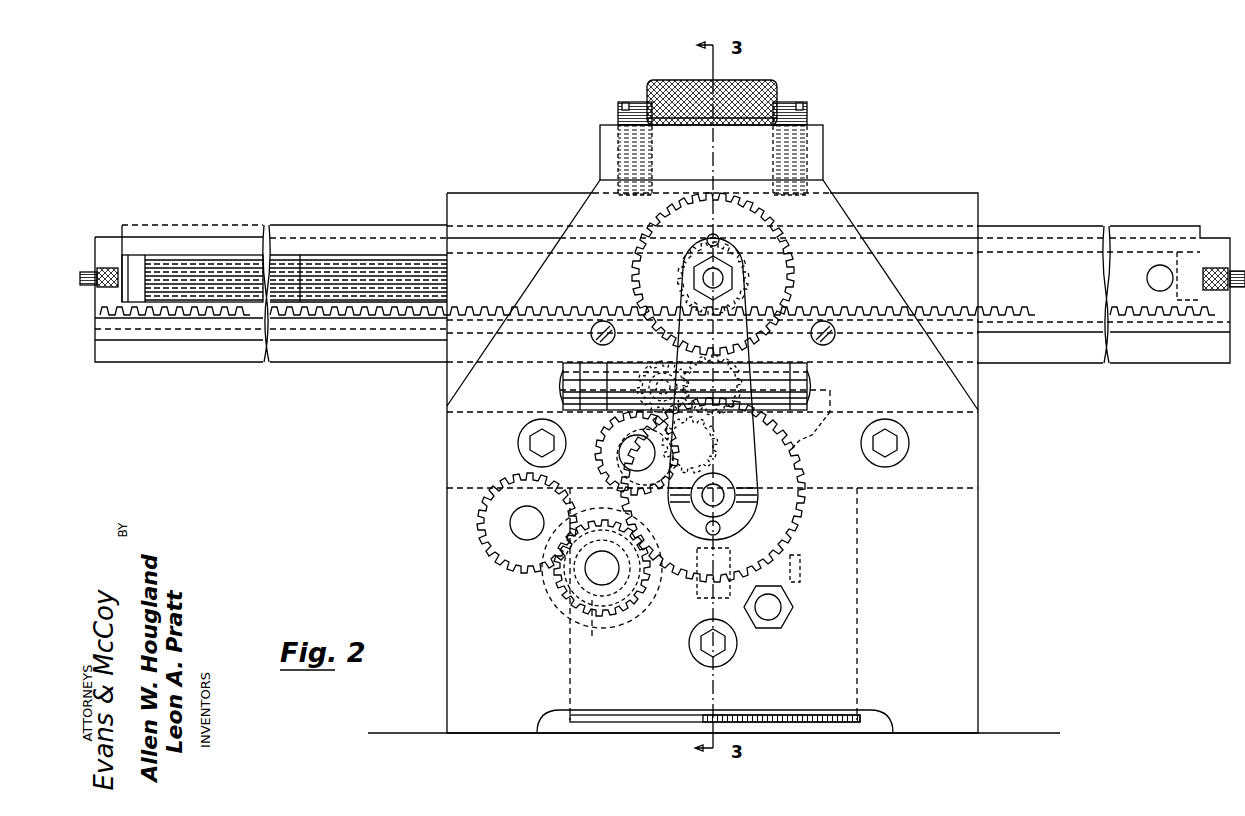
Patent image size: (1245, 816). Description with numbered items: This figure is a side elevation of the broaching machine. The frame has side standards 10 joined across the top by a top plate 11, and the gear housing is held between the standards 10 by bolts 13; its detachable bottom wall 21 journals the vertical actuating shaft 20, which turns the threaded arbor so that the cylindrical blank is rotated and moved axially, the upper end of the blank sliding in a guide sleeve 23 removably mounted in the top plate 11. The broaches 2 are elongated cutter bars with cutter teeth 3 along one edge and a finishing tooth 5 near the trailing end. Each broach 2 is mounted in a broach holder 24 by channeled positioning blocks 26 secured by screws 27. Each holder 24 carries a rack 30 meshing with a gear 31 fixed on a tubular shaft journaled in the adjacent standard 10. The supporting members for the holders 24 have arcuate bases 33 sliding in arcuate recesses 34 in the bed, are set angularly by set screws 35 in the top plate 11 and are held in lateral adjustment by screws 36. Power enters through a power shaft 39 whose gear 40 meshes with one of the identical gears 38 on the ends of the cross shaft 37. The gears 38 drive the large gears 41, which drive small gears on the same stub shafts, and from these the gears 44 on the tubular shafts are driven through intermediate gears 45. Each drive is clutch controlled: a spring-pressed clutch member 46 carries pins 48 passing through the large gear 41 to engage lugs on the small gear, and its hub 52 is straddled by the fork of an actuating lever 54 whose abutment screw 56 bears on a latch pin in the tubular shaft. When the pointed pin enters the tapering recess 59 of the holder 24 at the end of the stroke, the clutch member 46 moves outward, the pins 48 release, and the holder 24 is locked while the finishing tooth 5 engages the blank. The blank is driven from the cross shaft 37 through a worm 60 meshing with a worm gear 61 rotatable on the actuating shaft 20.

The broach 2 is at (190, 270).
The cutter teeth 3 is at (300, 275).
The finishing tooth 5 is at (165, 280).
The side standard 10 is at (968, 527).
The top plate 11 is at (600, 135).
The bolt 13 is at (520, 440).
The actuating shaft 20 is at (700, 596).
The bottom wall 21 is at (840, 722).
The guide sleeve 23 is at (783, 80).
The broach holder 24 is at (372, 236).
The positioning block 26 is at (135, 255).
The screw 27 is at (90, 268).
The rack 30 is at (470, 306).
The gear 31 is at (727, 278).
The arcuate base 33 is at (800, 440).
The arcuate recess 34 is at (812, 435).
The set screw 35 is at (807, 108).
The screw 36 is at (592, 338).
The cross shaft 37 is at (595, 580).
The gear 38 is at (630, 608).
The power shaft 39 is at (520, 535).
The gear 40 is at (510, 490).
The large gear 41 is at (790, 515).
The gear 44 is at (775, 268).
The intermediate gear 45 is at (610, 450).
The clutch member 46 is at (748, 520).
The clutch pin 48 is at (718, 445).
The hub 52 is at (735, 490).
The actuating lever 54 is at (757, 362).
The abutment screw 56 is at (705, 278).
The tapering recess 59 is at (1147, 278).
The worm 60 is at (600, 612).
The worm gear 61 is at (805, 585).